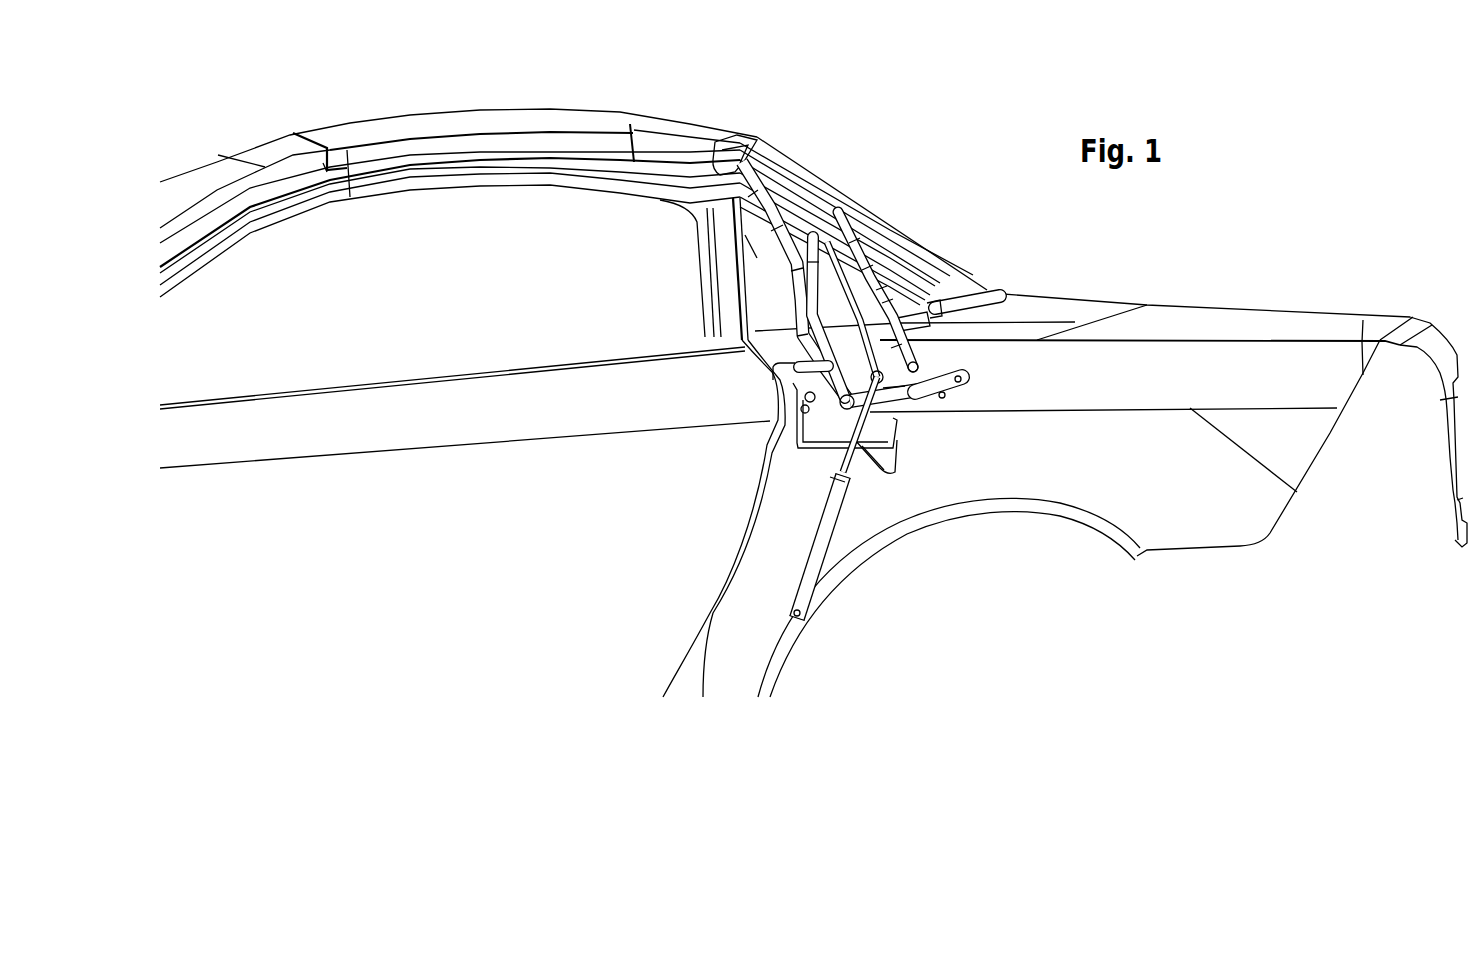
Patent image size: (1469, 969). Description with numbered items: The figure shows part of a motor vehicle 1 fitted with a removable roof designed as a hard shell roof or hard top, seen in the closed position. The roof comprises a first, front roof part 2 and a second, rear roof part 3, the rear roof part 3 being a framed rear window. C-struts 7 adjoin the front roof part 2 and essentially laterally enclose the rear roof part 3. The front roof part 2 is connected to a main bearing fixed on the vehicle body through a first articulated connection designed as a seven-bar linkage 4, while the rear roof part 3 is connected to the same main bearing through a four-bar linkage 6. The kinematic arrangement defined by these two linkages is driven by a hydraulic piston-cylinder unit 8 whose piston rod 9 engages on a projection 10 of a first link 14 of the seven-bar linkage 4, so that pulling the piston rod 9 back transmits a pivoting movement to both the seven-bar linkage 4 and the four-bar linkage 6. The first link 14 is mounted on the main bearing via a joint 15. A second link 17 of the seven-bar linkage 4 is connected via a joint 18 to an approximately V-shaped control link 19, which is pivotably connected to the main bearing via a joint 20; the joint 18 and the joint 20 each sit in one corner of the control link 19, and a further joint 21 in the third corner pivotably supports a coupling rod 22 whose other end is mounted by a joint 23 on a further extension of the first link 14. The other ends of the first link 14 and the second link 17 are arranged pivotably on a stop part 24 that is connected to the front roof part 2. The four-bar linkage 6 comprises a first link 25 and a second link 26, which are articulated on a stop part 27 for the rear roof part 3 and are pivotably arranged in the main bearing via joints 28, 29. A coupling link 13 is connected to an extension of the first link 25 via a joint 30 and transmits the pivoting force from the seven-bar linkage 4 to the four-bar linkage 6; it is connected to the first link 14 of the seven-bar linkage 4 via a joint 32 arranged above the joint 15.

The motor vehicle 1 is at (792, 83).
The front roof part 2 is at (415, 120).
The rear roof part 3 is at (888, 237).
The seven-bar linkage 4 is at (735, 336).
The four-bar linkage 6 is at (897, 255).
The C-struts 7 is at (716, 338).
The hydraulic piston-cylinder unit 8 is at (822, 537).
The piston rod 9 is at (851, 470).
The projection 10 is at (920, 367).
The coupling link 13 is at (772, 372).
The first link 14 is at (750, 243).
The joint 15 is at (840, 413).
The second link 17 is at (790, 237).
The joint 18 is at (962, 378).
The control link 19 is at (962, 386).
The joint 20 is at (965, 382).
The joint 21 is at (946, 399).
The coupling rod 22 is at (906, 396).
The joint 23 is at (797, 393).
The stop part 24 is at (682, 165).
The first link 25 is at (820, 258).
The second link 26 is at (893, 292).
The stop part 27 is at (860, 272).
The joint 28 is at (800, 400).
The joint 29 is at (884, 436).
The joint 30 is at (777, 381).
The joint 32 is at (832, 412).